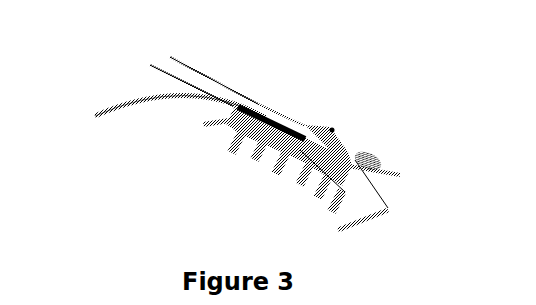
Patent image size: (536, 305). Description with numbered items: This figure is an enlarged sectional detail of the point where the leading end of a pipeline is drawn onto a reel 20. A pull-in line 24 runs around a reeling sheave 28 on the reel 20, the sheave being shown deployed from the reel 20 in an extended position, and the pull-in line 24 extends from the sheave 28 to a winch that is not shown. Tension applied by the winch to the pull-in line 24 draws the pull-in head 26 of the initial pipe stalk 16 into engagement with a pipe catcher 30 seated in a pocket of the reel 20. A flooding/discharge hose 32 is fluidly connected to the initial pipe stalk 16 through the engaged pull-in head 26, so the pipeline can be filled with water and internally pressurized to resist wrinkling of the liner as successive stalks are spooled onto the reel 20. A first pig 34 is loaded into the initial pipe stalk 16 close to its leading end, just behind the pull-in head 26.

The initial pipe stalk 16 is at (193, 75).
The reel 20 is at (123, 102).
The pull-in line 24 is at (407, 178).
The pull-in head 26 is at (335, 155).
The reeling sheave 28 is at (373, 158).
The pipe catcher 30 is at (295, 121).
The flooding/discharge hose 32 is at (330, 126).
The first pig 34 is at (250, 103).